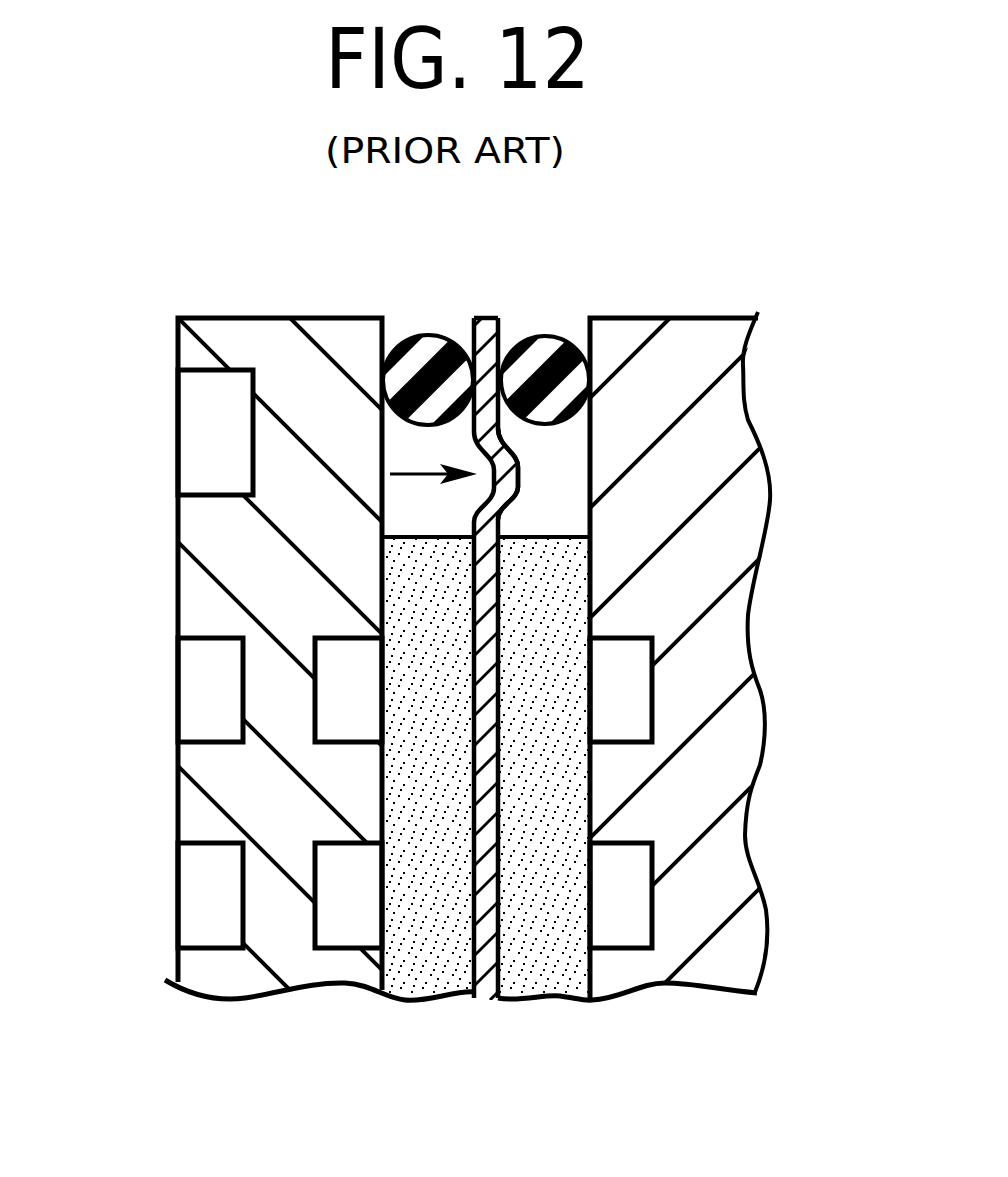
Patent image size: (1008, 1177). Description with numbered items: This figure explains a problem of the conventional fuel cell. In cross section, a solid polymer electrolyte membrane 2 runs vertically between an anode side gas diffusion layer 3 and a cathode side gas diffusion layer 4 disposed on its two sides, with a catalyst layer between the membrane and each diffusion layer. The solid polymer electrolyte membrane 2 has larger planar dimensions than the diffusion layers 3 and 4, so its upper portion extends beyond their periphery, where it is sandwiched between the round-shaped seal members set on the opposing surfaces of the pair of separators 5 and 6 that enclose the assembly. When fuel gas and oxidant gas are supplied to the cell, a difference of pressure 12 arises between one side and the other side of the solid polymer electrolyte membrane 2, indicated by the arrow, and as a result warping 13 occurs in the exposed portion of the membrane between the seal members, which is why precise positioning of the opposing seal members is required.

The solid polymer electrolyte membrane 2 is at (485, 973).
The anode side gas diffusion layer 3 is at (560, 800).
The cathode side gas diffusion layer 4 is at (425, 963).
The separator 5 is at (690, 960).
The separator 6 is at (222, 973).
The difference of pressure 12 is at (425, 474).
The warping 13 is at (517, 472).